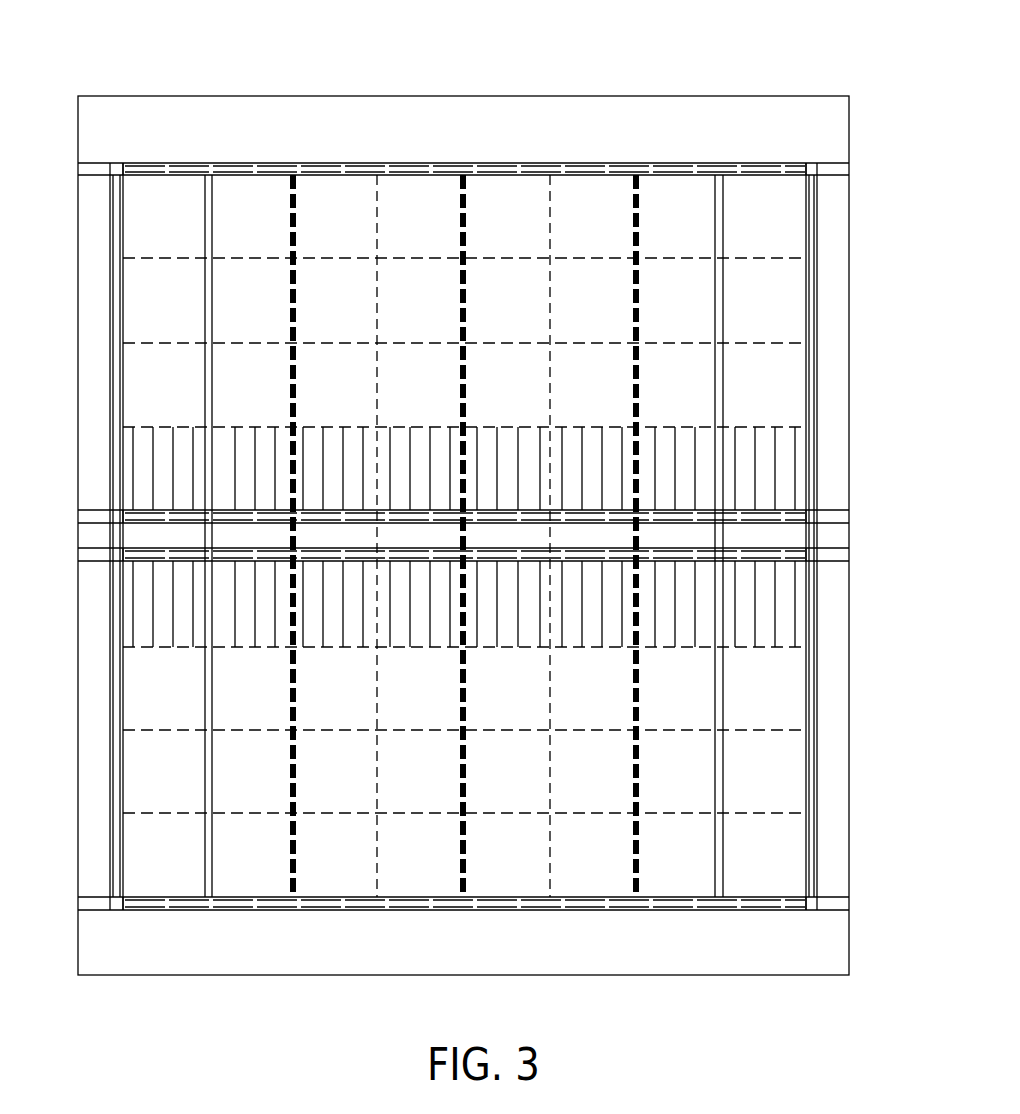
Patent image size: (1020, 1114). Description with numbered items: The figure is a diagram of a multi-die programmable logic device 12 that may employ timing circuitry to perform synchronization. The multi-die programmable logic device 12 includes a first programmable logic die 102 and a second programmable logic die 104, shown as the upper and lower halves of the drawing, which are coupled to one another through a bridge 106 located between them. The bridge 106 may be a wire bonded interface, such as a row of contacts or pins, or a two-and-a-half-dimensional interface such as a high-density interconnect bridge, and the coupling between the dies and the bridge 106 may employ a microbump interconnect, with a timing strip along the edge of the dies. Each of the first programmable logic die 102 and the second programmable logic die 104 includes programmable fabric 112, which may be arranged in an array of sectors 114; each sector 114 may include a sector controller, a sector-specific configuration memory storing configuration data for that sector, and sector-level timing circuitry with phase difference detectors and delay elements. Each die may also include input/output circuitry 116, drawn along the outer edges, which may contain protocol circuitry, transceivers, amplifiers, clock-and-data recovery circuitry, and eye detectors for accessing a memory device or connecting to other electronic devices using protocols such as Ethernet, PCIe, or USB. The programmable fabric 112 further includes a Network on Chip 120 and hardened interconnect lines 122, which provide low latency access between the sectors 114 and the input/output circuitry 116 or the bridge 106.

The multi-die programmable logic device 12 is at (70, 90).
The first programmable logic die 102 is at (870, 320).
The second programmable logic die 104 is at (862, 722).
The bridge 106 is at (852, 497).
The programmable fabric 112 is at (782, 213).
The sector 114 is at (150, 213).
The input/output (I/O) circuitry 116 is at (481, 147).
The Network on Chip (NoC) 120 is at (463, 284).
The hardened interconnect lines 122 is at (212, 290).